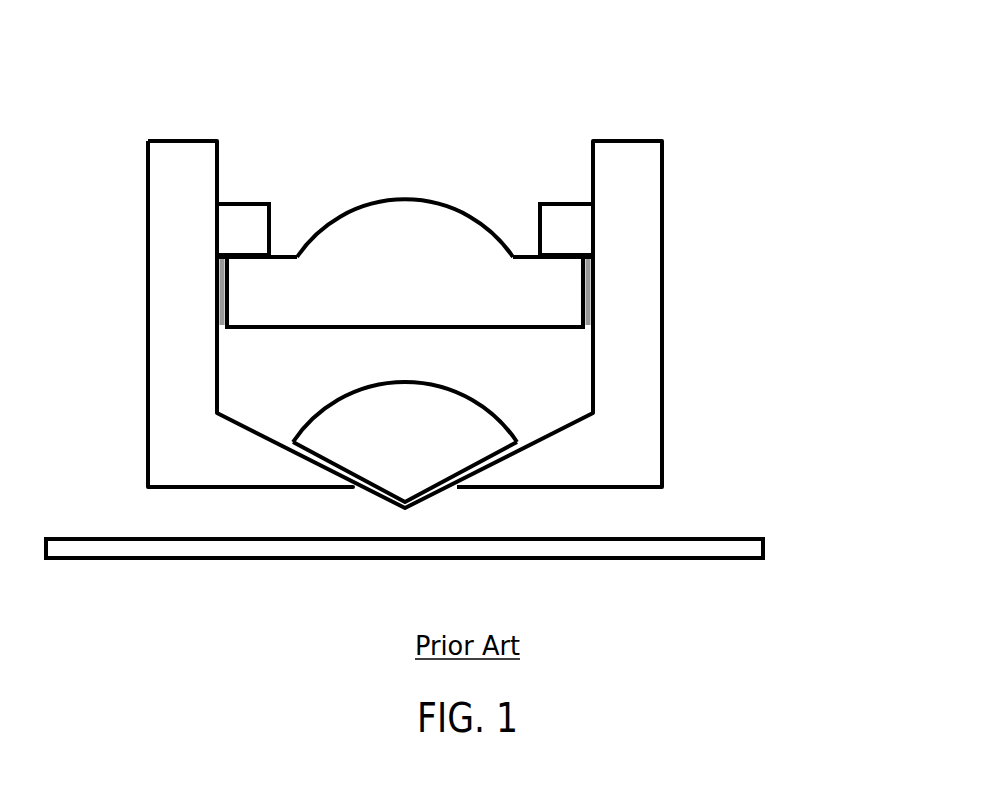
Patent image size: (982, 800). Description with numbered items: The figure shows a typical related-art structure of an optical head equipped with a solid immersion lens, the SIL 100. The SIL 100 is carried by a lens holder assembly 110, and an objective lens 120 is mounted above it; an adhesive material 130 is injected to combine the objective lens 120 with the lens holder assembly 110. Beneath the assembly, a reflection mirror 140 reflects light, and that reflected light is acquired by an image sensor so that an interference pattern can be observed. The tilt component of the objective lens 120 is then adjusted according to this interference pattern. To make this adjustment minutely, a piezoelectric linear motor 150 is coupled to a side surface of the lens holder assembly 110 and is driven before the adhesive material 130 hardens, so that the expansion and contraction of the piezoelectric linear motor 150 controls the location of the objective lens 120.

The SIL 100 is at (453, 412).
The lens holder assembly 110 is at (629, 150).
The objective lens 120 is at (393, 213).
The adhesive material 130 is at (220, 290).
The reflection mirror 140 is at (765, 546).
The piezoelectric linear motor 150 is at (563, 216).